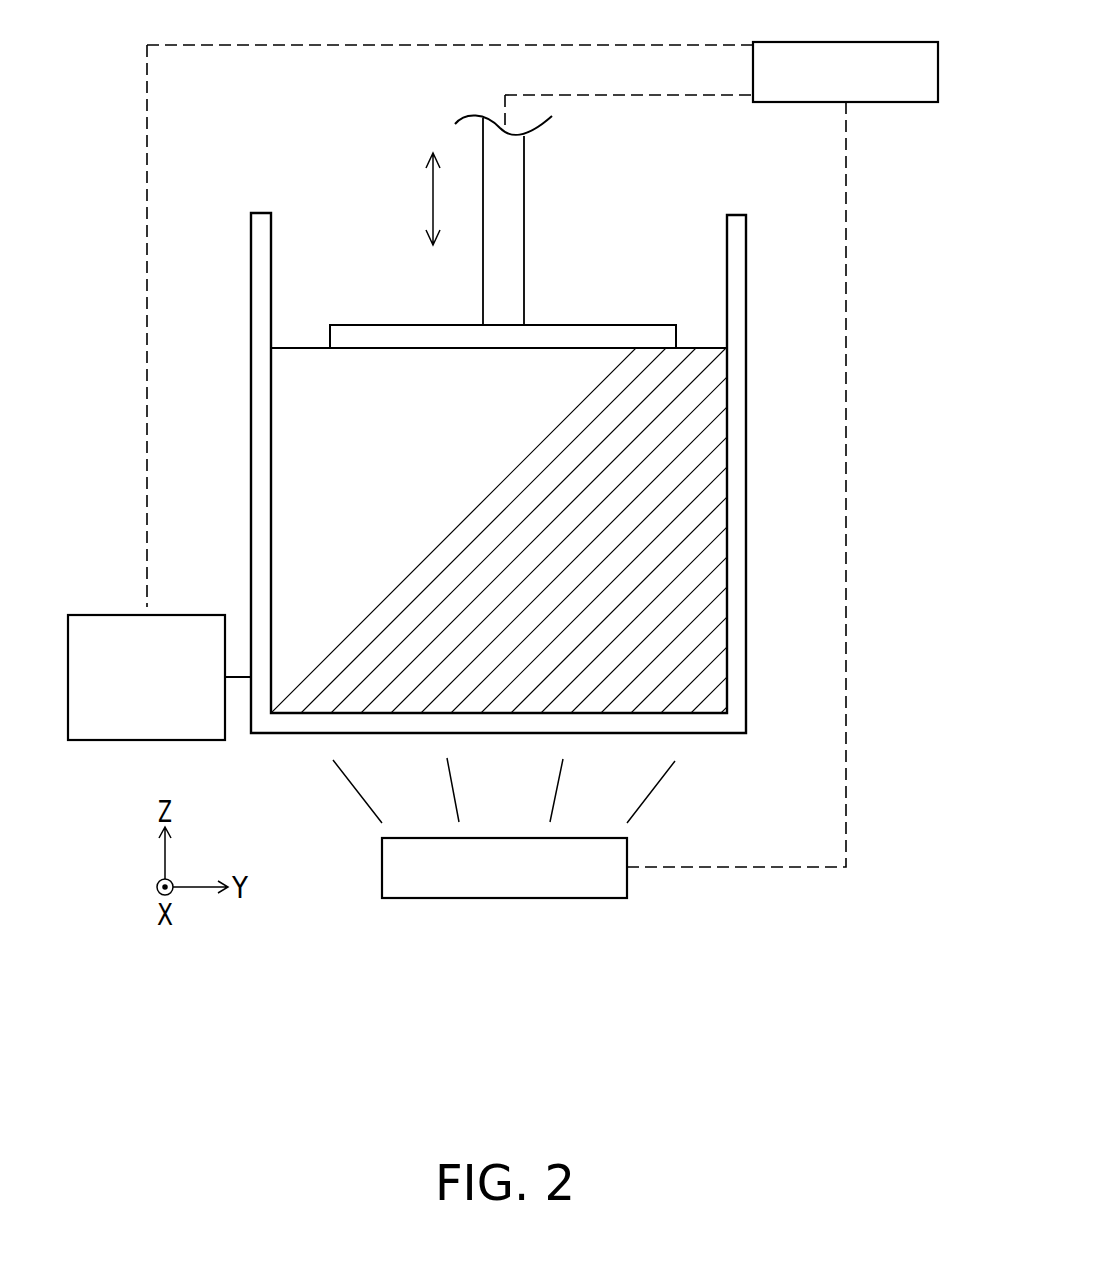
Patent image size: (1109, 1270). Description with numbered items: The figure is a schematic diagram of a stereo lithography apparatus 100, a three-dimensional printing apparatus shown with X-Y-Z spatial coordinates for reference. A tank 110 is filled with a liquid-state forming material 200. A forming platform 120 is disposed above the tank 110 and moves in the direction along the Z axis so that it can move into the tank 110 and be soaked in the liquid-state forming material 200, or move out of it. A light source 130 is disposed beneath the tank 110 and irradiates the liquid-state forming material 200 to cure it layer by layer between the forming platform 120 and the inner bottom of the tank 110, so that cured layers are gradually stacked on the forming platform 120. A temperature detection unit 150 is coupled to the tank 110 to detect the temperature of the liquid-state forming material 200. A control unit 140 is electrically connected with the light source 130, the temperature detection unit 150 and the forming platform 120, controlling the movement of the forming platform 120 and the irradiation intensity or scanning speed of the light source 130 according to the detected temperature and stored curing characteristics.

The stereo lithography apparatus 100 is at (865, 688).
The tank 110 is at (738, 615).
The forming platform 120 is at (603, 333).
The light source 130 is at (502, 900).
The control unit 140 is at (877, 42).
The temperature detection unit 150 is at (168, 614).
The liquid-state forming material 200 is at (305, 520).